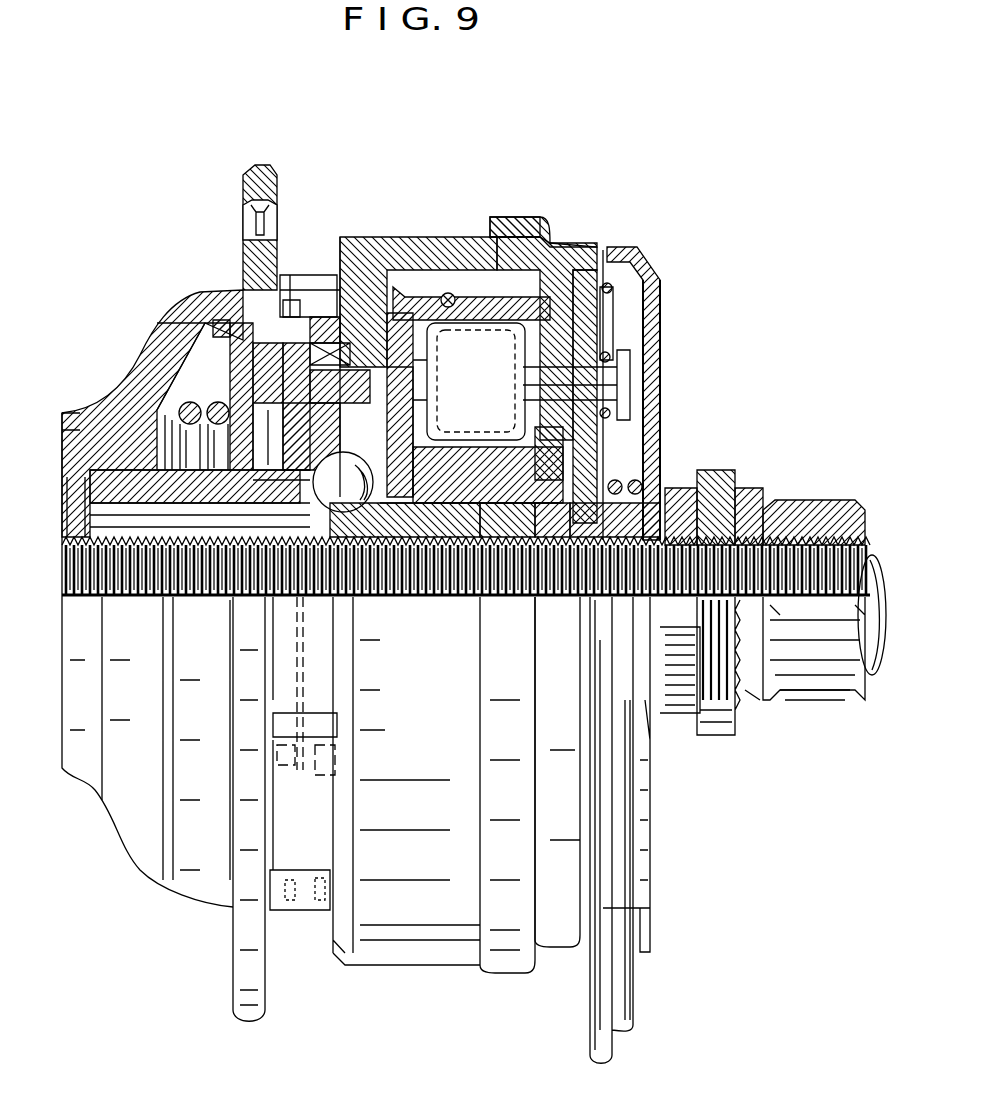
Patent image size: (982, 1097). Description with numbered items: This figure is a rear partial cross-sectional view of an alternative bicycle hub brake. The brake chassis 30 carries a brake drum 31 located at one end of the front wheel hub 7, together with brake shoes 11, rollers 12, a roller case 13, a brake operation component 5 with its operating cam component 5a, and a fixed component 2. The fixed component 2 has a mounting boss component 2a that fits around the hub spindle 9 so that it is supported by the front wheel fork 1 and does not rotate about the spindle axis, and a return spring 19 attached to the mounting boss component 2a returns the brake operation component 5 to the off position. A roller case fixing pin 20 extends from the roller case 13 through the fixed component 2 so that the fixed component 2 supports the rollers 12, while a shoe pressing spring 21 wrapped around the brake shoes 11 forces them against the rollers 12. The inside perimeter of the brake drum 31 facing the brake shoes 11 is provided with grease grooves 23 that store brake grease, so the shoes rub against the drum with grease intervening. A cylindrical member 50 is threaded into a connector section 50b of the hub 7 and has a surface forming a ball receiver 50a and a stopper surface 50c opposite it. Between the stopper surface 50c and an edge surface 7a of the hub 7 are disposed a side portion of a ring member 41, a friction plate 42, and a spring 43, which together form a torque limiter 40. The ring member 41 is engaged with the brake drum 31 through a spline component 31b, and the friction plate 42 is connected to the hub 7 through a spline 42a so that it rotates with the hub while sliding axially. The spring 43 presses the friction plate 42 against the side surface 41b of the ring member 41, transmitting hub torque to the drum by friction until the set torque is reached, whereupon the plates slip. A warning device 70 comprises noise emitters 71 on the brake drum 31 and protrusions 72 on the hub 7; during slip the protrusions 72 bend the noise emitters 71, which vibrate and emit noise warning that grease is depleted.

The front wheel fork 1 is at (715, 472).
The fixed component 2 is at (632, 256).
The mounting boss component 2a is at (565, 595).
The brake operation component 5 is at (632, 433).
The operating cam component 5a is at (502, 595).
The front wheel hub 7 is at (251, 166).
The edge surface of hub 7a is at (148, 590).
The hub spindle 9 is at (816, 545).
The brake shoes 11 is at (555, 325).
The rollers 12 is at (530, 340).
The roller case 13 is at (360, 340).
The return spring 19 is at (642, 478).
The roller case fixing pin 20 is at (622, 380).
The shoe pressing spring 21 is at (448, 292).
The grease grooves 23 is at (455, 318).
The brake chassis 30 is at (535, 212).
The brake drum 31 is at (435, 340).
The spline component 31b is at (405, 383).
The torque limiter 40 is at (205, 352).
The ring member 41 is at (447, 590).
The side surface of ring member 41b is at (262, 403).
The friction plate 42 is at (200, 590).
The spline 42a is at (228, 330).
The spring 43 is at (178, 380).
The cylindrical member 50 is at (92, 590).
The ball receiver 50a is at (322, 520).
The connector section 50b is at (150, 440).
The stopper surface 50c is at (243, 597).
The warning device 70 is at (317, 262).
The noise emitters 71 is at (328, 280).
The protrusions 72 is at (297, 275).